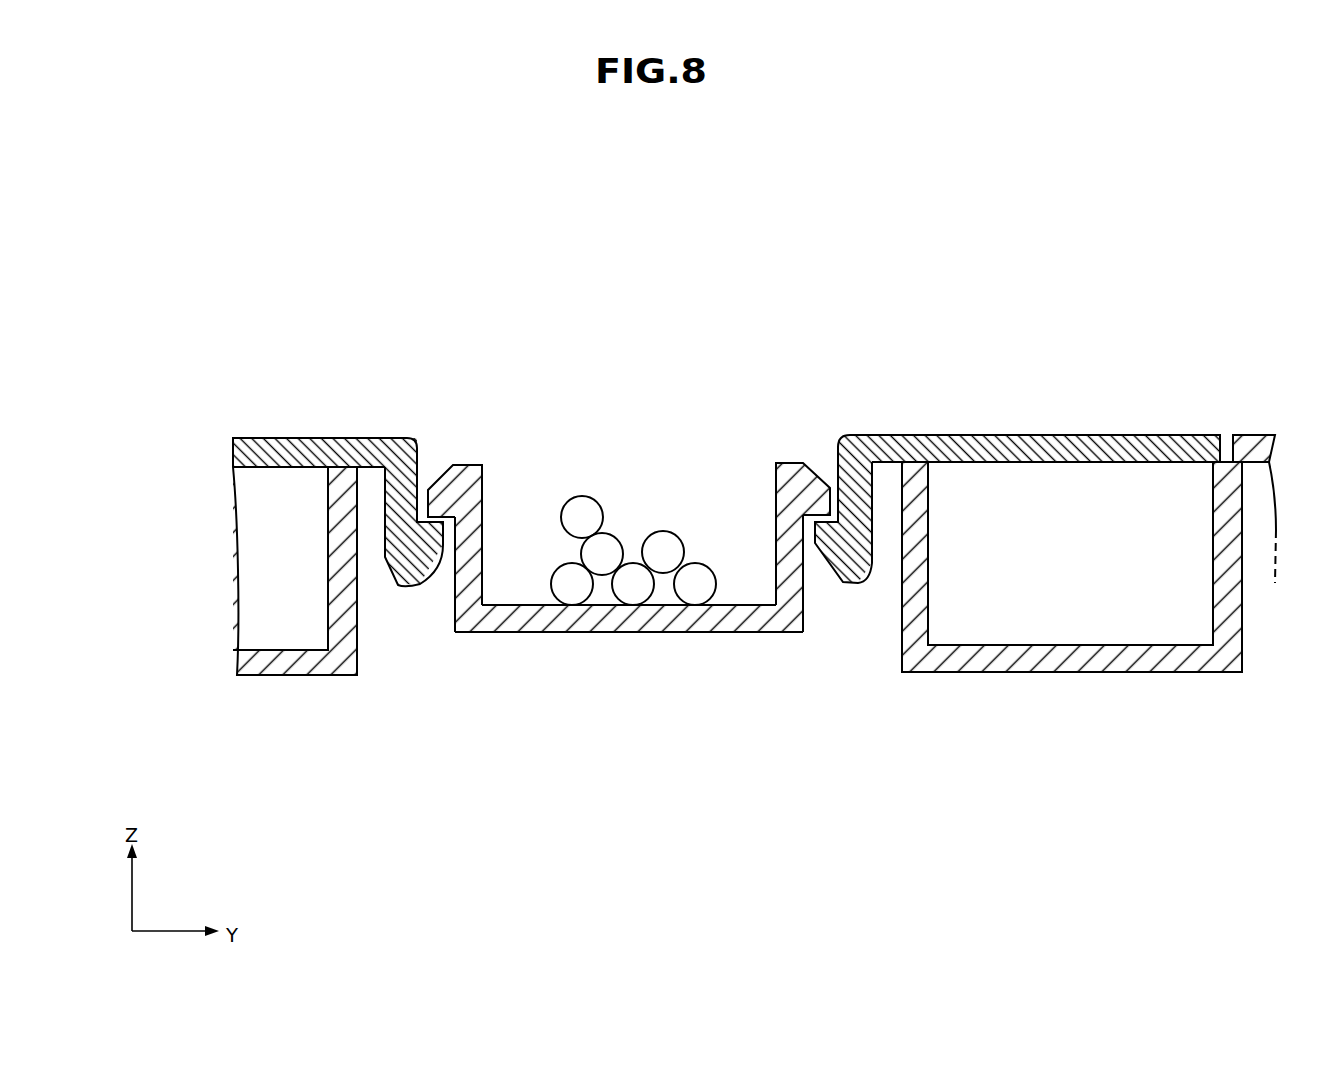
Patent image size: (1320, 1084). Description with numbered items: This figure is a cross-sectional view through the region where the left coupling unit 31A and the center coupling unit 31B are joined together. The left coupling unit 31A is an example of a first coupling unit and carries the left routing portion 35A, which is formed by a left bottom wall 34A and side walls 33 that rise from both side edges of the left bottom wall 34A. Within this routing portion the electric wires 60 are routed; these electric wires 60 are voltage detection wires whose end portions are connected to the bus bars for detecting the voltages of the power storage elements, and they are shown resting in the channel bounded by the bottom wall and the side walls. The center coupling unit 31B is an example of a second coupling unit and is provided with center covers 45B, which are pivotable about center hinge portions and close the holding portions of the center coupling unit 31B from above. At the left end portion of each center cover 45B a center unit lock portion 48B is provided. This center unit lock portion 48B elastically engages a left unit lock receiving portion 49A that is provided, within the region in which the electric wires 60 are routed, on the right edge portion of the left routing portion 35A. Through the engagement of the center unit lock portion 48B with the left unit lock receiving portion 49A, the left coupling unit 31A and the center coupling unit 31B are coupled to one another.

The left coupling unit 31A is at (262, 665).
The center coupling unit 31B is at (1167, 447).
The side walls 33 is at (475, 562).
The left bottom wall 34A is at (712, 620).
The left routing portion 35A is at (490, 488).
The center cover 45B is at (255, 458).
The center unit lock portion 48B is at (422, 553).
The left unit lock receiving portion 49A is at (453, 483).
The electric wires 60 is at (610, 547).